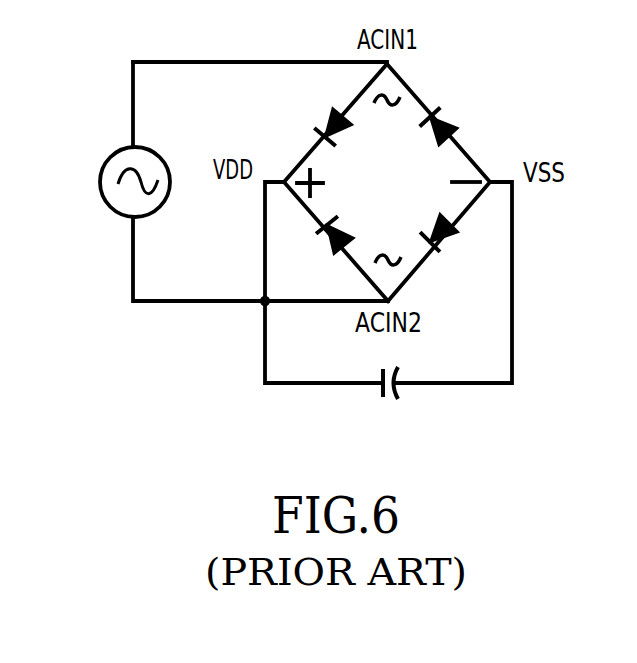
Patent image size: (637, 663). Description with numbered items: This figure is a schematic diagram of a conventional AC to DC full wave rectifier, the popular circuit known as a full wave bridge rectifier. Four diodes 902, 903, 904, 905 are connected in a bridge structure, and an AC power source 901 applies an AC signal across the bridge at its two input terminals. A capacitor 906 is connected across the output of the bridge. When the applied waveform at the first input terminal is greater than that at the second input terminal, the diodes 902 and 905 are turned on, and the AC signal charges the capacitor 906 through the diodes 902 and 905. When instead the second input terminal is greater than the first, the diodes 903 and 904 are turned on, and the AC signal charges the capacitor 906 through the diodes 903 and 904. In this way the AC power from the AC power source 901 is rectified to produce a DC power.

The AC power source 901 is at (98, 196).
The diode 902 is at (331, 110).
The diode 903 is at (466, 124).
The diode 904 is at (325, 250).
The diode 905 is at (447, 260).
The capacitor 906 is at (394, 408).